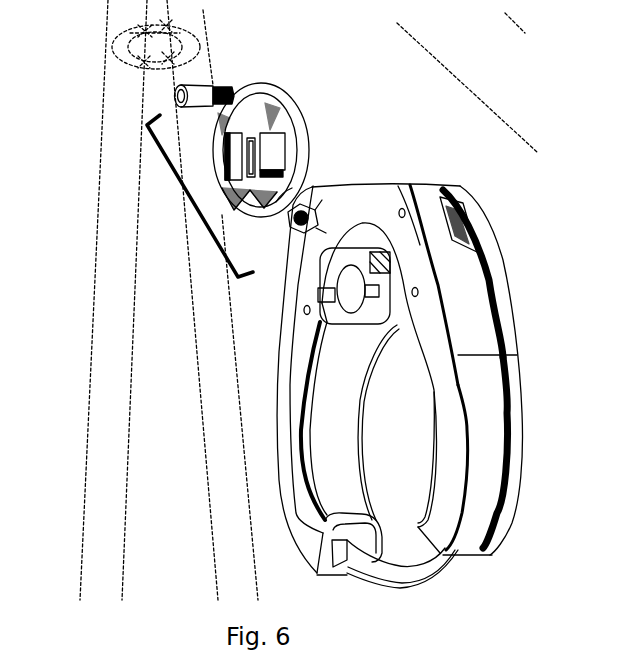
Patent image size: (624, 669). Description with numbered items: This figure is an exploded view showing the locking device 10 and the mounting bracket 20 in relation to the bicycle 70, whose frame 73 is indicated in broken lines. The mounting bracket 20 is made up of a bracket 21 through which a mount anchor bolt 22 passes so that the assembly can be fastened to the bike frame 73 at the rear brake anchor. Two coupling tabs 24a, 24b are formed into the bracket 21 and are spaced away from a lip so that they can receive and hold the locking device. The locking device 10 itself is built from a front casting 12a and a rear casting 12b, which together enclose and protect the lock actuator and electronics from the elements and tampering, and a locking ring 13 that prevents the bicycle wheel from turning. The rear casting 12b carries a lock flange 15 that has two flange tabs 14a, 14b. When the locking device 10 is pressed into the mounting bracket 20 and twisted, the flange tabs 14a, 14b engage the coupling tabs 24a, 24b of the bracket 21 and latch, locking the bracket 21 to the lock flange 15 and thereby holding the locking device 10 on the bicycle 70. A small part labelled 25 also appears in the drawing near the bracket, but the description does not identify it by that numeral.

The locking device 10 is at (386, 167).
The front casting 12a is at (512, 497).
The rear casting 12b is at (483, 319).
The locking ring 13 is at (408, 553).
The lock flange tab 14a is at (327, 312).
The lock flange tab 14b is at (374, 322).
The lock flange 15 is at (361, 224).
The mounting bracket 20 is at (193, 199).
The bracket 21 is at (265, 86).
The mount anchor bolt 22 is at (197, 87).
The coupling tab 24a is at (288, 137).
The coupling tab 24b is at (277, 155).
The nut 25 is at (266, 216).
The bicycle 70 is at (98, 213).
The bicycle frame 73 is at (212, 507).